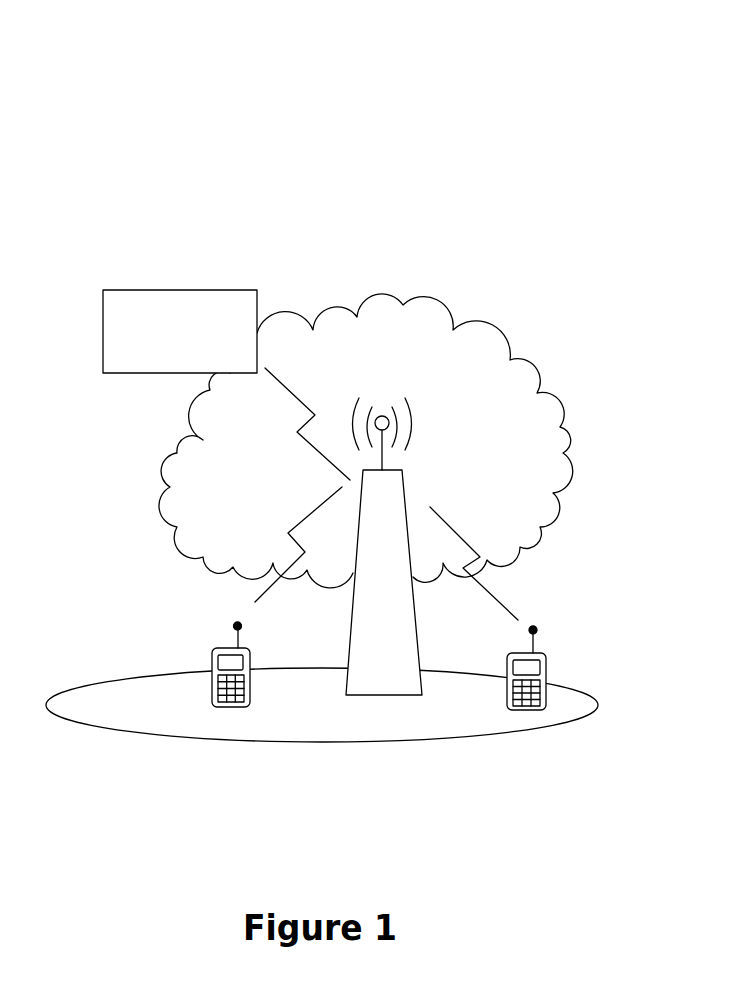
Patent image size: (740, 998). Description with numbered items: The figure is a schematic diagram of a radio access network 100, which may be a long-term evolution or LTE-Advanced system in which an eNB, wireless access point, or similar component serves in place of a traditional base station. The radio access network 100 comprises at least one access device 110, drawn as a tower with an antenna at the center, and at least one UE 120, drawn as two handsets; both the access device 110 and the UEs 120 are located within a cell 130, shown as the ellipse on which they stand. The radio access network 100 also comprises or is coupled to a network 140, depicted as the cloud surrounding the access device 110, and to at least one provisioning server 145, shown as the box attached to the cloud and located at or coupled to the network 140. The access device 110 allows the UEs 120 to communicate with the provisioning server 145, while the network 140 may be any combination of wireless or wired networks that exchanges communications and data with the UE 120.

The radio access network 100 is at (322, 410).
The access device 110 is at (407, 480).
The UE 120 is at (213, 648).
The cell 130 is at (280, 743).
The network 140 is at (447, 302).
The provisioning server 145 is at (257, 290).